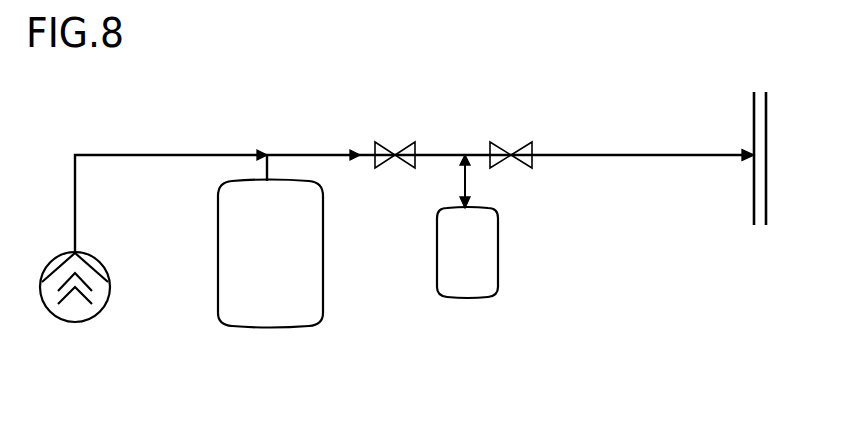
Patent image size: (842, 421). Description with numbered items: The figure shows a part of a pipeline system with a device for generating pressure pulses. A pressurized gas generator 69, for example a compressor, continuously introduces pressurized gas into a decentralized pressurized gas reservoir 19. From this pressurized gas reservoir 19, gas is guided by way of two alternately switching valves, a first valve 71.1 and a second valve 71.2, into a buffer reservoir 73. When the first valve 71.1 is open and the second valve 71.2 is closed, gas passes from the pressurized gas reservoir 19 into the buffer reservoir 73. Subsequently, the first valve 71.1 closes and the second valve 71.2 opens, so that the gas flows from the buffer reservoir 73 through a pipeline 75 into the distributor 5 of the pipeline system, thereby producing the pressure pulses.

The distributor 5 is at (754, 110).
The decentralized pressurized gas reservoir 19 is at (322, 290).
The pressurized gas generator 69 is at (73, 323).
The first valve 71.1 is at (395, 155).
The second valve 71.2 is at (511, 155).
The buffer reservoir 73 is at (498, 283).
The pipeline 75 is at (651, 153).